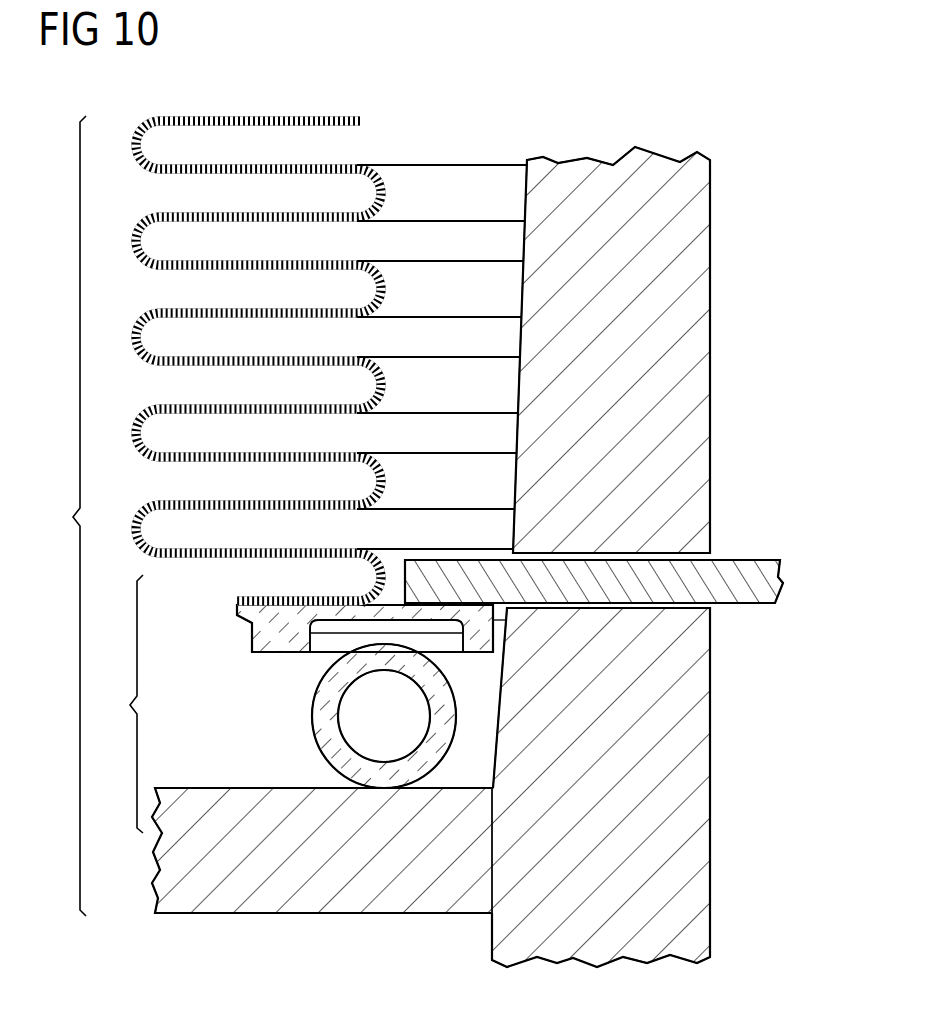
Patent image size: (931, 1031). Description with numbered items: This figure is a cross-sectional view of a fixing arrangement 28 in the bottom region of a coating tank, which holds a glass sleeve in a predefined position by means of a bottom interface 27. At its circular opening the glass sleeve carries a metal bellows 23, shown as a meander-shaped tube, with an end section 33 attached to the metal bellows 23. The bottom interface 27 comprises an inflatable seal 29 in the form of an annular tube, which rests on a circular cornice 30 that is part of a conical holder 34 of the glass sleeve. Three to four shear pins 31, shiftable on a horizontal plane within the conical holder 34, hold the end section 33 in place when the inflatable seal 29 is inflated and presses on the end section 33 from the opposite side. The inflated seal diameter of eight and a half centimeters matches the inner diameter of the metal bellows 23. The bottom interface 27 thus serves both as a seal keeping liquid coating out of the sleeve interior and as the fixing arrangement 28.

The metal bellows 23 is at (350, 164).
The bottom interface 27 is at (120, 704).
The fixing arrangement 28 is at (62, 516).
The inflatable seal 29 is at (322, 714).
The circular cornice 30 is at (200, 868).
The shear pins 31 is at (468, 572).
The end section 33 is at (252, 632).
The conical holder 34 is at (700, 688).